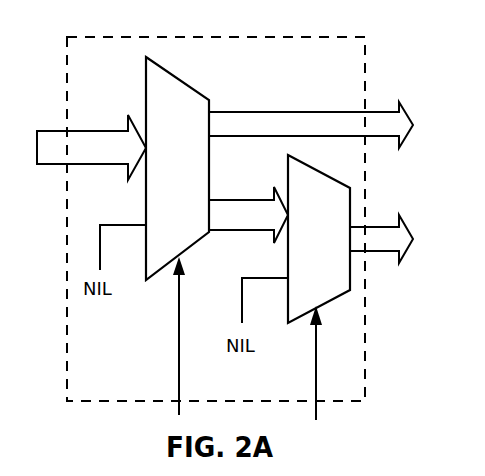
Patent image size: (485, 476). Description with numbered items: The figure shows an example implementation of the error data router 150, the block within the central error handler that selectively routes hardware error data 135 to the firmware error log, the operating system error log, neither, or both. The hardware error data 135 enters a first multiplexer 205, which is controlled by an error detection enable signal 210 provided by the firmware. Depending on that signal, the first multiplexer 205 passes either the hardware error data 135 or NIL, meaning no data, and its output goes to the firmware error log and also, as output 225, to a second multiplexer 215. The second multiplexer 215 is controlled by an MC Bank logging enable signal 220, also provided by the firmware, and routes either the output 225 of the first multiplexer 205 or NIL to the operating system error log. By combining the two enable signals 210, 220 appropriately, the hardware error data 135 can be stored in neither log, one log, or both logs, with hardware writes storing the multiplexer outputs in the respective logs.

The error data router 150 is at (166, 34).
The hardware error data 135 is at (91, 147).
The first multiplexer 205 is at (177, 168).
The output of the first multiplexer 225 is at (248, 215).
The second multiplexer 215 is at (319, 239).
The error detection enable signal 210 is at (178, 312).
The MC Bank logging enable signal 220 is at (315, 362).